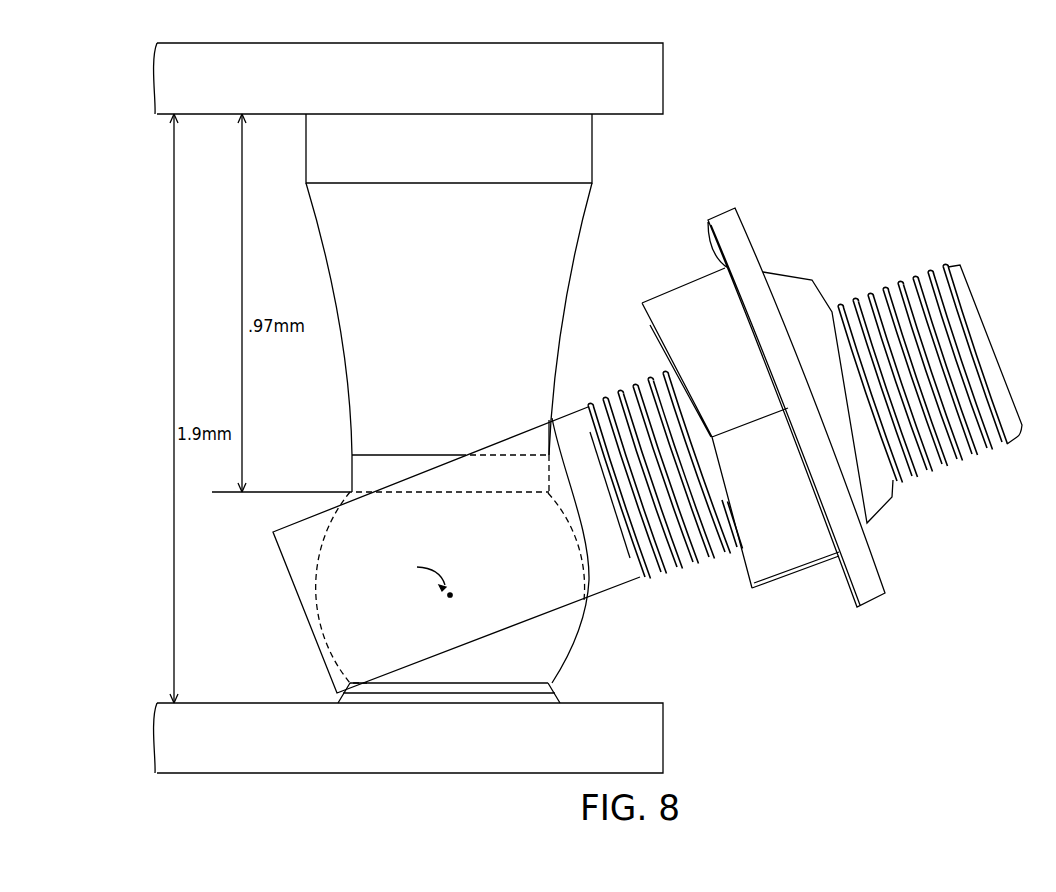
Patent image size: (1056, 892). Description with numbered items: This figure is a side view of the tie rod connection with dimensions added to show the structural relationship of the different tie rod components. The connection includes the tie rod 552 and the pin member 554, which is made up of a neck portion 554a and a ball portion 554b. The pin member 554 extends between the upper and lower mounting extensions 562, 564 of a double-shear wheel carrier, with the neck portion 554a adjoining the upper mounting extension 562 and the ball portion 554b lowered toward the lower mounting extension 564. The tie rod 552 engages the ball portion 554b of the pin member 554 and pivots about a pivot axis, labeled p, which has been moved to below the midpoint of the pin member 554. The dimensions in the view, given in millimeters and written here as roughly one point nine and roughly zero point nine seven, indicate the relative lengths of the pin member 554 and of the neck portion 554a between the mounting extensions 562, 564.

The tie rod 552 is at (625, 557).
The pin member 554 is at (455, 162).
The neck portion 554a is at (566, 213).
The ball portion 554b is at (552, 645).
The upper mounting extension 562 is at (455, 92).
The lower mounting extension 564 is at (455, 745).